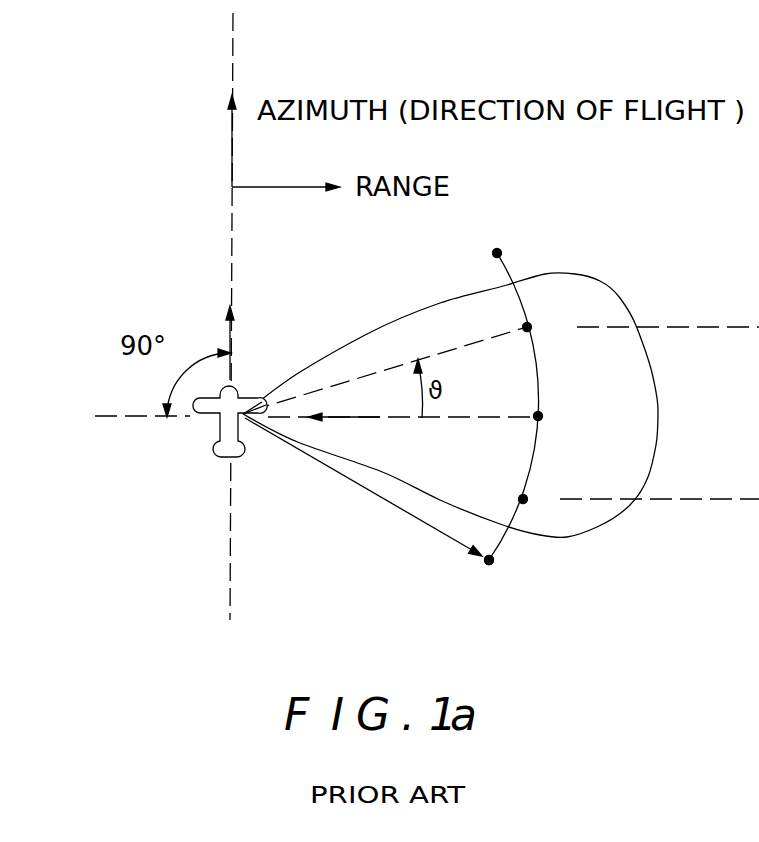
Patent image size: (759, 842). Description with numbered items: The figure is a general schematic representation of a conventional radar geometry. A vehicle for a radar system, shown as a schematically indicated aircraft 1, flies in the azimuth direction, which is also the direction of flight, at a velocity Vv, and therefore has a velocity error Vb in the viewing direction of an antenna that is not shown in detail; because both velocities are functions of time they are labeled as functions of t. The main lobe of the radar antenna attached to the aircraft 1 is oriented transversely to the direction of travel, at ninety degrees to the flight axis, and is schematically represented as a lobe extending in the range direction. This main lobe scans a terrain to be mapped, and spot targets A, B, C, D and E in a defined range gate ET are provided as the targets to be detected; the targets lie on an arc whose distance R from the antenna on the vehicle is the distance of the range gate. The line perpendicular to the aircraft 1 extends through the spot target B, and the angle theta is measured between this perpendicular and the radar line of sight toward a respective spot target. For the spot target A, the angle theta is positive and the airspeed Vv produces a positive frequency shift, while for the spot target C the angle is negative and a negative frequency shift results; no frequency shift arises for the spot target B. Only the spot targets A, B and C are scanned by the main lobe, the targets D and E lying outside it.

The aircraft 1 is at (207, 411).
The spot target A is at (541, 327).
The spot target B is at (553, 418).
The spot target C is at (536, 501).
The spot target D is at (513, 243).
The spot target E is at (503, 568).
The range gate ET is at (480, 572).
The distance of the range gate R is at (363, 487).
The velocity of the aircraft Vv is at (266, 340).
The velocity error Vb is at (345, 436).